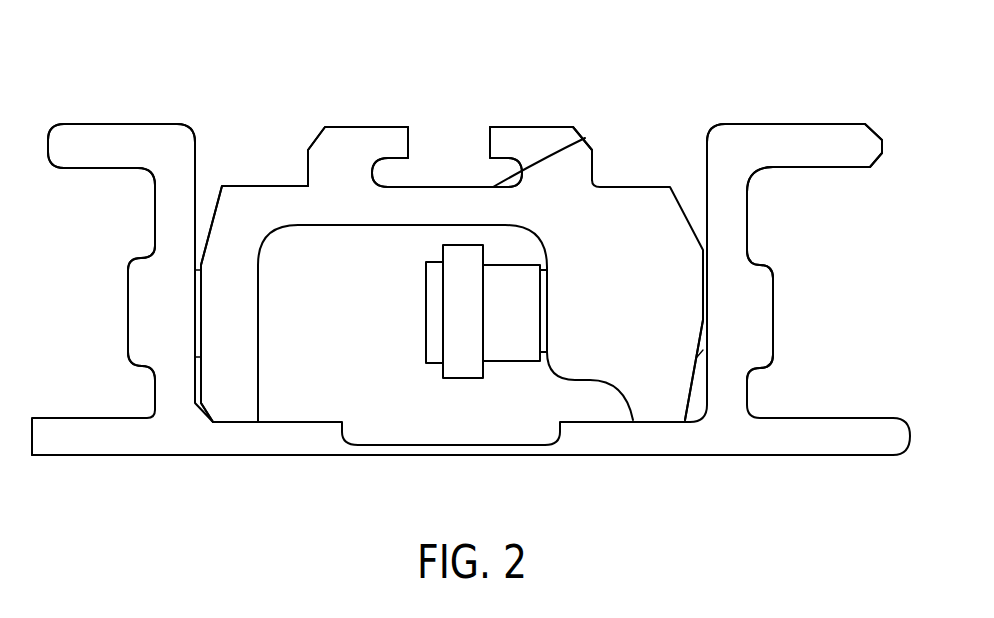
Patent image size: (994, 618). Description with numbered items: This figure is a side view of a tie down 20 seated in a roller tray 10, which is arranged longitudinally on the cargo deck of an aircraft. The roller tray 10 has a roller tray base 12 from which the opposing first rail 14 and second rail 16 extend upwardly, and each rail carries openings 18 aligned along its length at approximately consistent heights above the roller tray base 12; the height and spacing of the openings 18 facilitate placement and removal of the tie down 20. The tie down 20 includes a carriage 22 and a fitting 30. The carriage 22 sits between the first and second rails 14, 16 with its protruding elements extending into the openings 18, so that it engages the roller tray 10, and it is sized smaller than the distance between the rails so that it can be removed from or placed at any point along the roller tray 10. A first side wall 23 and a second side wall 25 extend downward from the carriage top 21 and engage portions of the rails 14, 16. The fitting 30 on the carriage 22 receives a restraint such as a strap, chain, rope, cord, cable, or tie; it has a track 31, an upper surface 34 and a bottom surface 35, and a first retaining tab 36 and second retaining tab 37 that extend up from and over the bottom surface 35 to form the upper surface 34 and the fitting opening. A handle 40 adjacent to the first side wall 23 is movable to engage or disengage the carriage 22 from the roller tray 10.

The roller tray 10 is at (122, 110).
The roller tray base 12 is at (283, 442).
The first rail 14 is at (735, 232).
The second rail 16 is at (165, 228).
The openings 18 is at (127, 305).
The tie down 20 is at (655, 112).
The carriage top 21 is at (258, 184).
The carriage 22 is at (310, 207).
The first side wall 23 is at (660, 377).
The second side wall 25 is at (232, 352).
The fitting 30 is at (368, 127).
The track 31 is at (452, 172).
The upper surface 34 is at (500, 157).
The bottom surface 35 is at (585, 138).
The first retaining tab 36 is at (553, 137).
The second retaining tab 37 is at (390, 140).
The handle 40 is at (468, 367).